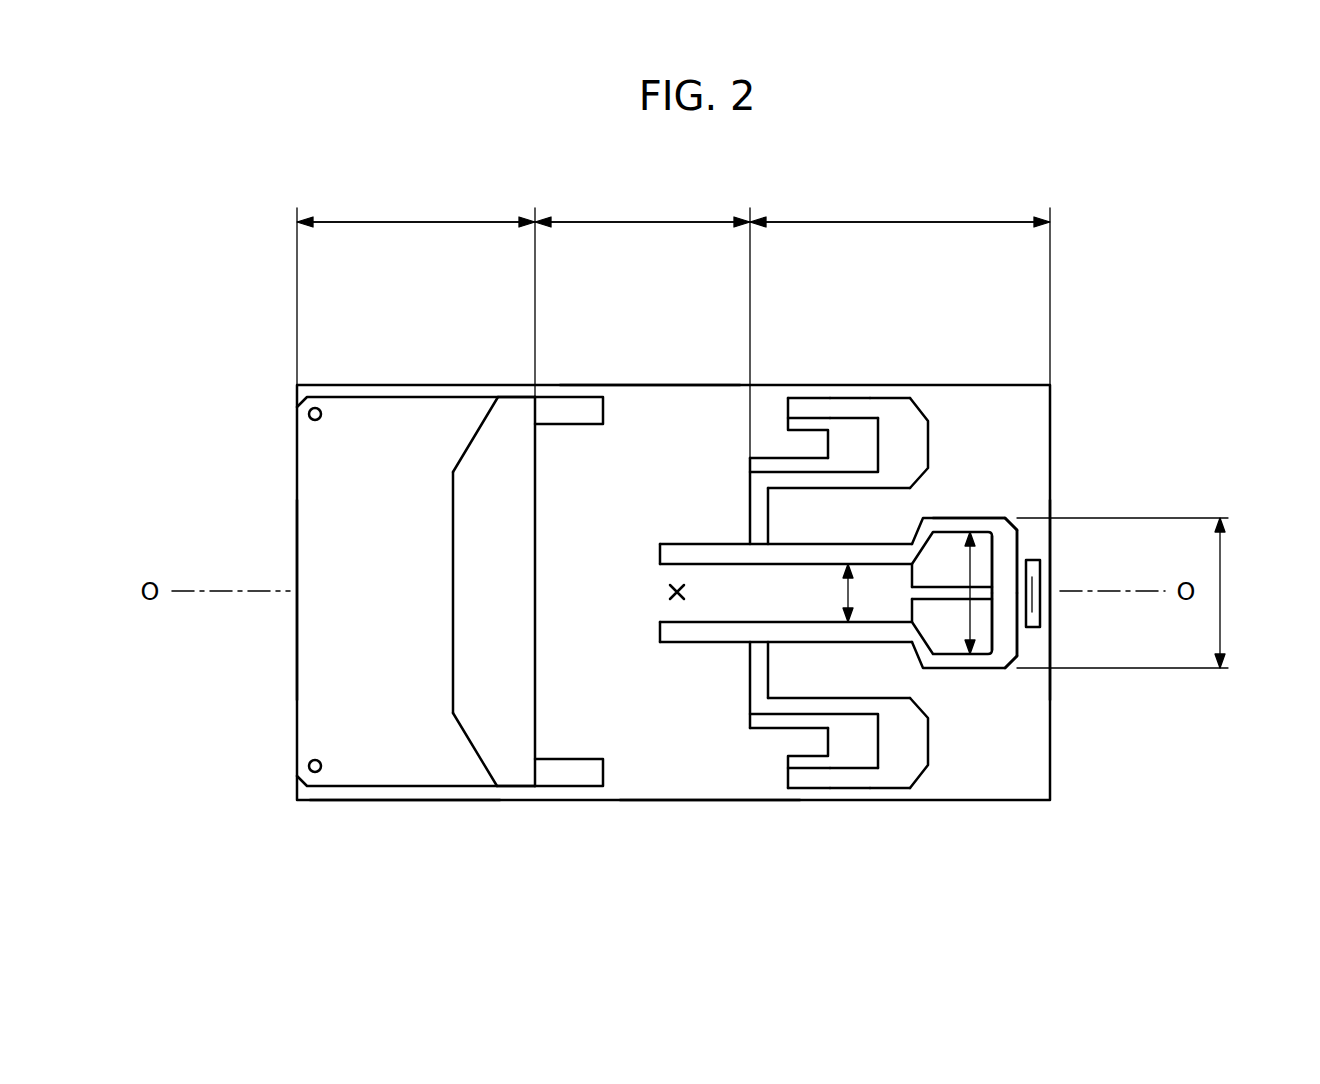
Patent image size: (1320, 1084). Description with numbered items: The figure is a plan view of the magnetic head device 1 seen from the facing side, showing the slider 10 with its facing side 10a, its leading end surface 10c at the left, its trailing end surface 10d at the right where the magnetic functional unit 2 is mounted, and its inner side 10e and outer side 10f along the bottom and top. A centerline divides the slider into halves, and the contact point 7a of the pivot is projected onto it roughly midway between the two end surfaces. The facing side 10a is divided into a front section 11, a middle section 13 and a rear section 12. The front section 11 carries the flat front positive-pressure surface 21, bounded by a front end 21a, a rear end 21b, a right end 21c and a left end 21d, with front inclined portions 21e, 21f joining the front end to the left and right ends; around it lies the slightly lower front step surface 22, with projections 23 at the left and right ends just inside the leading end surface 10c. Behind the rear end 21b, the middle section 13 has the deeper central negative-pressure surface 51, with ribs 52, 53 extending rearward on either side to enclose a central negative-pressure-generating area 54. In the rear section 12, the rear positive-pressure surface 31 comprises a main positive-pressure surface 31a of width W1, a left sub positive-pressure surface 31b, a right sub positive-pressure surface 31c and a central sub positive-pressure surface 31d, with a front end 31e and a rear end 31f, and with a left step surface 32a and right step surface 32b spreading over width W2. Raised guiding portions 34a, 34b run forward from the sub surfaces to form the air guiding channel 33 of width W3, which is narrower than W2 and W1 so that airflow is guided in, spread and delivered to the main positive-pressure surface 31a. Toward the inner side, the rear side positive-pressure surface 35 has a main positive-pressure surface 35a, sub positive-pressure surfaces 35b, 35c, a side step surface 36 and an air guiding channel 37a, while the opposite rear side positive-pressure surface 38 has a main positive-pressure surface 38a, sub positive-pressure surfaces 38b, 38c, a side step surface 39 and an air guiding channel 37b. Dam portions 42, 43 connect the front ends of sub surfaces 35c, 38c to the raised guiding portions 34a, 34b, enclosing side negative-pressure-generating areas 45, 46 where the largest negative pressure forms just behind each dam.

The magnetic head device 1 is at (1082, 333).
The magnetic functional unit 2 is at (1040, 588).
The contact point 7a is at (643, 627).
The slider 10 is at (660, 806).
The facing side 10a is at (405, 683).
The leading end surface 10c is at (297, 638).
The trailing end surface 10d is at (1050, 612).
The inner side 10e is at (700, 804).
The outer side 10f is at (640, 385).
The front section 11 is at (427, 221).
The rear section 12 is at (898, 221).
The middle section 13 is at (645, 221).
The front positive-pressure surface 21 is at (460, 605).
The front end 21a is at (452, 597).
The rear end 21b is at (536, 563).
The right end 21c is at (518, 396).
The left end 21d is at (517, 790).
The front inclined portion 21e is at (467, 740).
The front inclined portion 21f is at (463, 453).
The front step surface 22 is at (333, 505).
The projections 23 is at (309, 414).
The rear positive-pressure surface 31 is at (1013, 548).
The main positive-pressure surface 31a is at (1020, 570).
The left sub positive-pressure surface 31b is at (1003, 582).
The right sub positive-pressure surface 31c is at (965, 522).
The central sub positive-pressure surface 31d is at (1003, 548).
The front end 31e is at (912, 597).
The rear end 31f is at (1018, 645).
The left step surface 32a is at (980, 672).
The right step surface 32b is at (962, 522).
The air guiding channel 33 is at (777, 598).
The raised guiding portion 34a is at (833, 636).
The raised guiding portion 34b is at (803, 546).
The rear side positive-pressure surface 35 is at (878, 822).
The main positive-pressure surface 35a is at (918, 819).
The sub positive-pressure surface 35b is at (848, 783).
The sub positive-pressure surface 35c is at (862, 714).
The side step surface 36 is at (847, 755).
The air guiding channel 37a is at (805, 740).
The air guiding channel 37b is at (808, 445).
The rear side positive-pressure surface 38 is at (845, 346).
The main positive-pressure surface 38a is at (896, 369).
The sub positive-pressure surface 38b is at (856, 410).
The sub positive-pressure surface 38c is at (826, 415).
The side step surface 39 is at (870, 458).
The dam portion 42 is at (760, 685).
The dam portion 43 is at (757, 505).
The side negative-pressure-generating area 45 is at (812, 680).
The side negative-pressure-generating area 46 is at (798, 508).
The central negative-pressure surface 51 is at (597, 480).
The rib 52 is at (572, 790).
The rib 53 is at (573, 410).
The central negative-pressure-generating area 54 is at (547, 635).
The left-to-right width W1 is at (1141, 593).
The spreading left-to-right width W2 is at (952, 593).
The width W3 is at (827, 593).